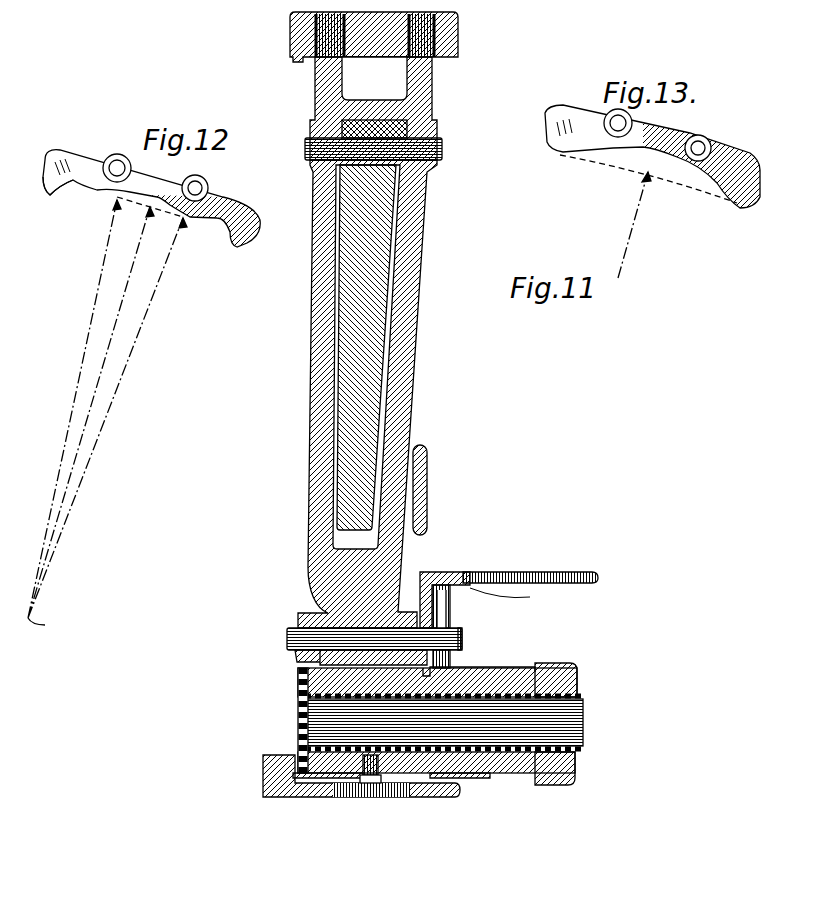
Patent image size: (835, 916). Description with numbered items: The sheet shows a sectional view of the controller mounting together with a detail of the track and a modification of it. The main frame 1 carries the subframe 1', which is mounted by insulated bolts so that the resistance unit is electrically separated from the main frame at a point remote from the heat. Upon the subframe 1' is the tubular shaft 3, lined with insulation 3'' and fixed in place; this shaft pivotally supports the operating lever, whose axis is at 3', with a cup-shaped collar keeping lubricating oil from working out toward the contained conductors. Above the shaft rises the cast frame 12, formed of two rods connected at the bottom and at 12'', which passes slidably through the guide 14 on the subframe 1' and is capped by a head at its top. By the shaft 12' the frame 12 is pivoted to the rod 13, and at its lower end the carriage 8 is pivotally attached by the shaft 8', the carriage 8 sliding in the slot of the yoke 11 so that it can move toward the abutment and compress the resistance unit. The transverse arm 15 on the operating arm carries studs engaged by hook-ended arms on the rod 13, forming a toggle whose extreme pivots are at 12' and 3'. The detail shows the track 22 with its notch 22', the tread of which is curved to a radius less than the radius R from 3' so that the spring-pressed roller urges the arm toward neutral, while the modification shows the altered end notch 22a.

In FIG. 11, the frame 1 is at (332, 796).
In FIG. 11, the subframe 1' is at (343, 468).
In FIG. 11, the tubular shaft 3 is at (464, 730).
In FIG. 11, the insulation 3'' is at (473, 716).
In FIG. 12, the axis of the pivoted arm 3' is at (107, 427).
In FIG. 11, the carriage 8 is at (436, 596).
In FIG. 11, the shaft 8' is at (506, 626).
In FIG. 11, the yoke 11 is at (443, 608).
In FIG. 11, the cast frame 12 is at (397, 342).
In FIG. 11, the shaft 12' is at (409, 128).
In FIG. 11, the connection of the frame rods 12'' is at (374, 81).
In FIG. 11, the rod 13 is at (368, 272).
In FIG. 11, the guide 14 is at (457, 50).
In FIG. 11, the transverse arm 15 is at (428, 488).
In FIG. 12, the track 22 is at (168, 217).
In FIG. 12, the notch 22' is at (64, 210).
In FIG. 13, the modified end notch 22a is at (747, 210).
In FIG. 12, the radius R is at (143, 317).
In FIG. 13, the radius R is at (623, 260).